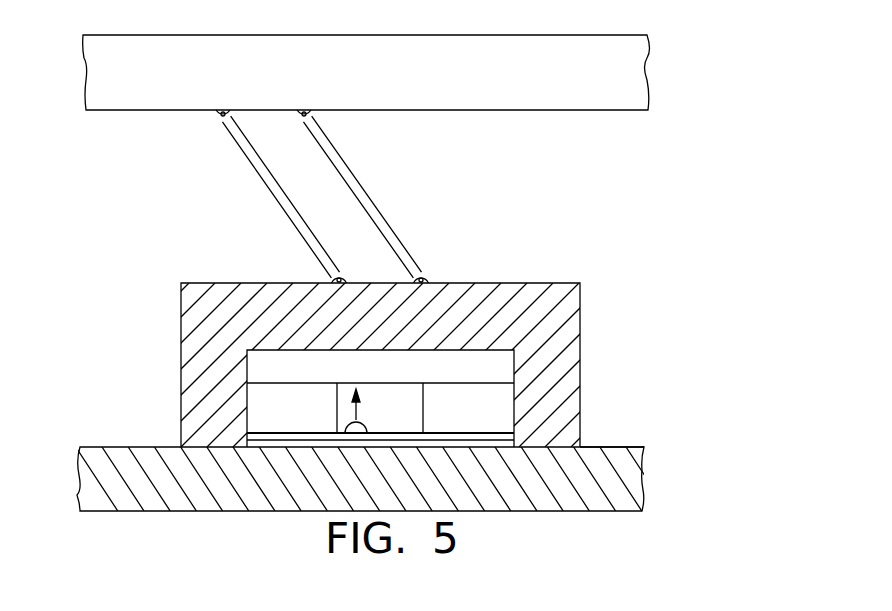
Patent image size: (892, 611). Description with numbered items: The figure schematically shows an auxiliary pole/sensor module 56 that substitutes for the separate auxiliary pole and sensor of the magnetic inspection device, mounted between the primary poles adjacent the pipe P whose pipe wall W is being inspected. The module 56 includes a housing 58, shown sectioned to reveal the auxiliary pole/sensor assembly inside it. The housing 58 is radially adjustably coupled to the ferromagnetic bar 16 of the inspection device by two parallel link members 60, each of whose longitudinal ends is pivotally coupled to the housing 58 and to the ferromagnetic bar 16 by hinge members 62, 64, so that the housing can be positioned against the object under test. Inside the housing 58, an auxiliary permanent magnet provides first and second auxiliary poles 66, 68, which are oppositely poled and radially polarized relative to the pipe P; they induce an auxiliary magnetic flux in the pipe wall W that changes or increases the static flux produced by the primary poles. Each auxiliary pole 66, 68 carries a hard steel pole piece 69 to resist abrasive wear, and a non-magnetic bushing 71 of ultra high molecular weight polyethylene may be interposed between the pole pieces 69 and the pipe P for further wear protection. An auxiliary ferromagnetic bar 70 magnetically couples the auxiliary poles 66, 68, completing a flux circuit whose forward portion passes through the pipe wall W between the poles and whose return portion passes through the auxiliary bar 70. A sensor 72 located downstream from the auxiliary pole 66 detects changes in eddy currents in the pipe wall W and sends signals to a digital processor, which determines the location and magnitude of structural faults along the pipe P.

The ferromagnetic bar 16 is at (533, 34).
The auxiliary pole/sensor module 56 is at (380, 330).
The housing 58 is at (181, 333).
The parallel link members 60 is at (347, 184).
The hinge members 62 is at (429, 277).
The upper pivots 64 is at (218, 120).
The first auxiliary pole 66 is at (267, 405).
The second auxiliary pole 68 is at (497, 397).
The pole piece 69 is at (260, 433).
The auxiliary ferromagnetic bar 70 is at (475, 350).
The bushing 71 is at (257, 442).
The sensor 72 is at (358, 412).
The pipe wall W is at (588, 446).
The pipe P is at (622, 442).